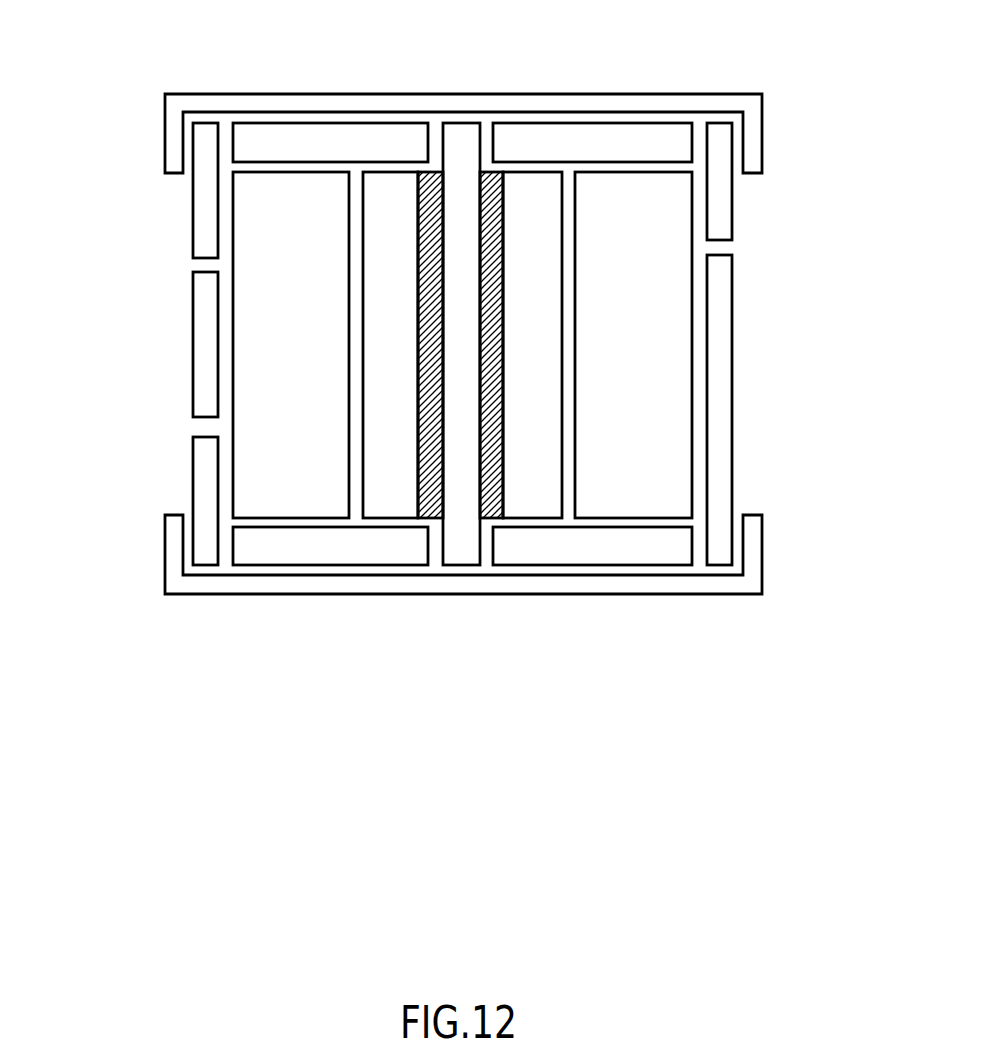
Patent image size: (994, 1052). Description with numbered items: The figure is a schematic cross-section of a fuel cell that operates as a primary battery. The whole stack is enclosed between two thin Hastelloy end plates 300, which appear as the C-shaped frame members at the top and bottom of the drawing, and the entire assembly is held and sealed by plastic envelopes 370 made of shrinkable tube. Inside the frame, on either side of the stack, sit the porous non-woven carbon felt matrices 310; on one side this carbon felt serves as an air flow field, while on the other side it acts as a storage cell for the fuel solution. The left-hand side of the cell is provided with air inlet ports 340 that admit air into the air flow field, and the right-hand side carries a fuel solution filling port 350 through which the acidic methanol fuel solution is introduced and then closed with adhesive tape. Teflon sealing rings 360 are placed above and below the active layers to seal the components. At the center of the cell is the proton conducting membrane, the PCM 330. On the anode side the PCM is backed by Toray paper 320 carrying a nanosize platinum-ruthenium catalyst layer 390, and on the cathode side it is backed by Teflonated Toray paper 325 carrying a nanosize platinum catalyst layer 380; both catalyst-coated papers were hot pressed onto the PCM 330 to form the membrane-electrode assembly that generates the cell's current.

The end plates 300 is at (189, 346).
The porous non-woven carbon felt 310 is at (298, 202).
The Toray paper 320 is at (527, 500).
The Teflonated Toray paper 325 is at (383, 500).
The PCM 330 is at (455, 553).
The air inlet ports 340 is at (189, 263).
The fuel solution filling port 350 is at (736, 250).
The Teflon sealing rings 360 is at (284, 138).
The plastic envelopes 370 is at (750, 152).
The catalyst layer 380 is at (432, 460).
The catalyst layer 390 is at (497, 430).